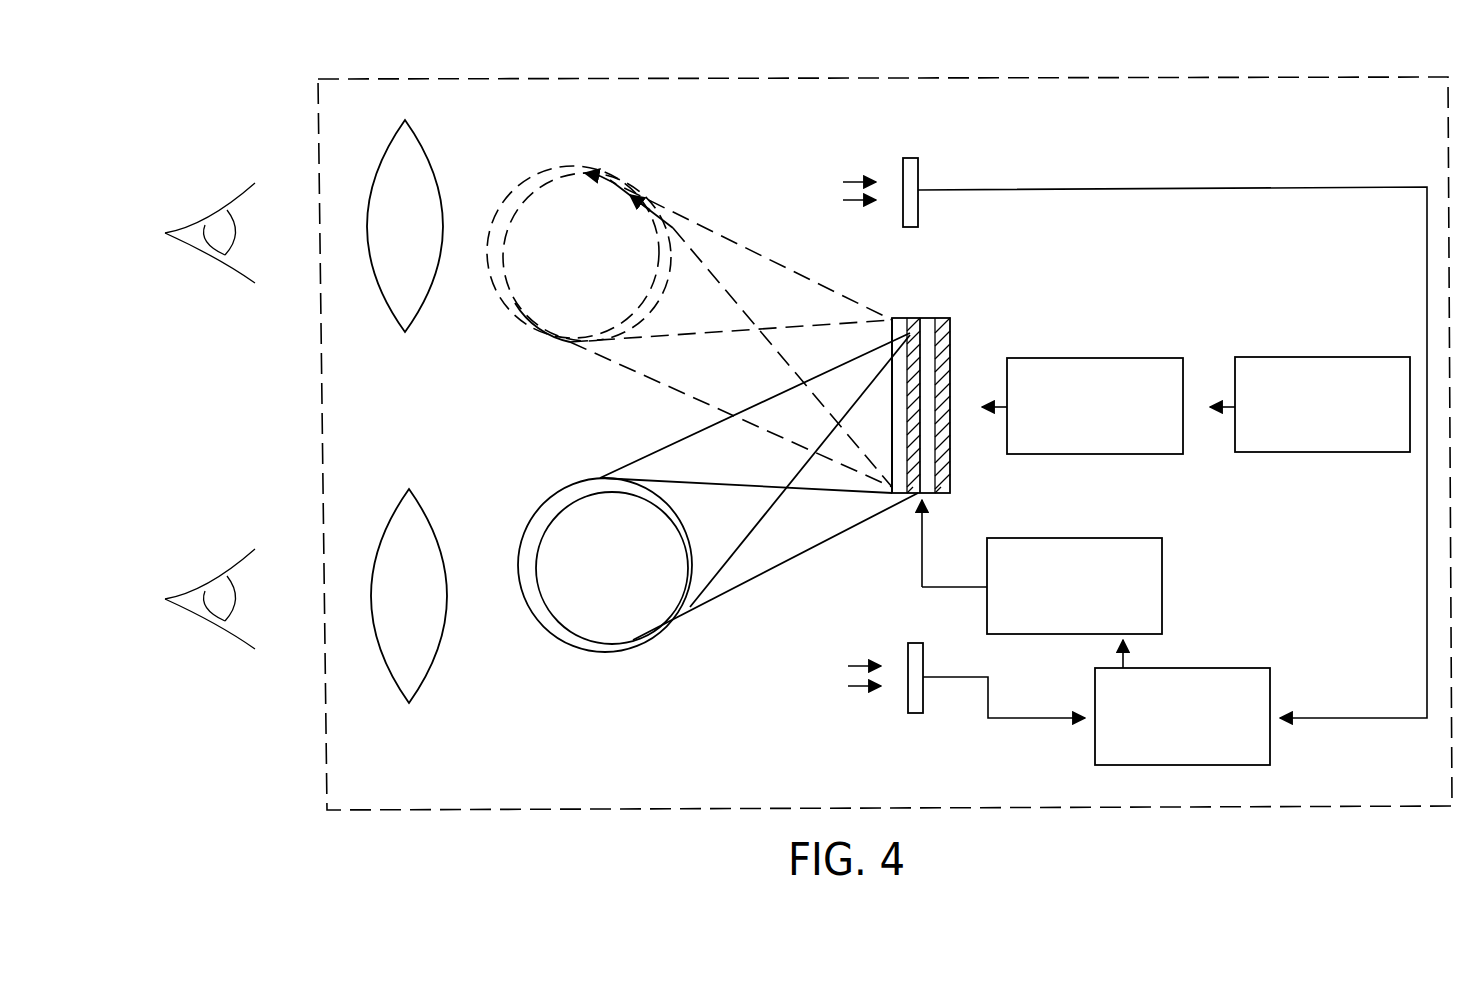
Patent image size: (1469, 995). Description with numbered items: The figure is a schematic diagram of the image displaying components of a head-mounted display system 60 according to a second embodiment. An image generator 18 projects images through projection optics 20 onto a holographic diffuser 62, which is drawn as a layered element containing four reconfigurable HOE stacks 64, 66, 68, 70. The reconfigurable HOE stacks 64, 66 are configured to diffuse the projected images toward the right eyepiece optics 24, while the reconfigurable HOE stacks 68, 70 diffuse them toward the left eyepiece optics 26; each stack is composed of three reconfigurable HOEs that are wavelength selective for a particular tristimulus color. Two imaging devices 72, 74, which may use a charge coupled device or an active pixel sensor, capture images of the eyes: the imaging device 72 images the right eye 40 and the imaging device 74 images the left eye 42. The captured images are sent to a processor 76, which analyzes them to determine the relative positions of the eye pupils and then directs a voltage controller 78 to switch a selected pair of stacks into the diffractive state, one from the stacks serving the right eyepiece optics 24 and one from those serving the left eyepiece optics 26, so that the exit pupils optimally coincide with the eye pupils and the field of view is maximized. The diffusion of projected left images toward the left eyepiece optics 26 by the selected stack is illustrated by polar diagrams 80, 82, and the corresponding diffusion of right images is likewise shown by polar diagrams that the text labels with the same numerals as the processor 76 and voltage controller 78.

The image generator 18 is at (1315, 357).
The projection optics 20 is at (1100, 358).
The right eyepiece optics 24 is at (425, 677).
The left eyepiece optics 26 is at (385, 300).
The right eye 40 is at (193, 598).
The left eye 42 is at (190, 232).
The head-mounted display system 60 is at (1200, 78).
The holographic diffuser 62 is at (926, 418).
The reconfigurable HOE stack 64 is at (950, 493).
The reconfigurable HOE stack 66 is at (936, 495).
The reconfigurable HOE stack 68 is at (912, 495).
The reconfigurable HOE stack 70 is at (900, 493).
The imaging device 72 is at (915, 643).
The imaging device 74 is at (908, 158).
The processor 76 is at (700, 600).
The voltage controller 78 is at (777, 566).
The polar diagram 80 is at (743, 242).
The polar diagram 82 is at (677, 213).